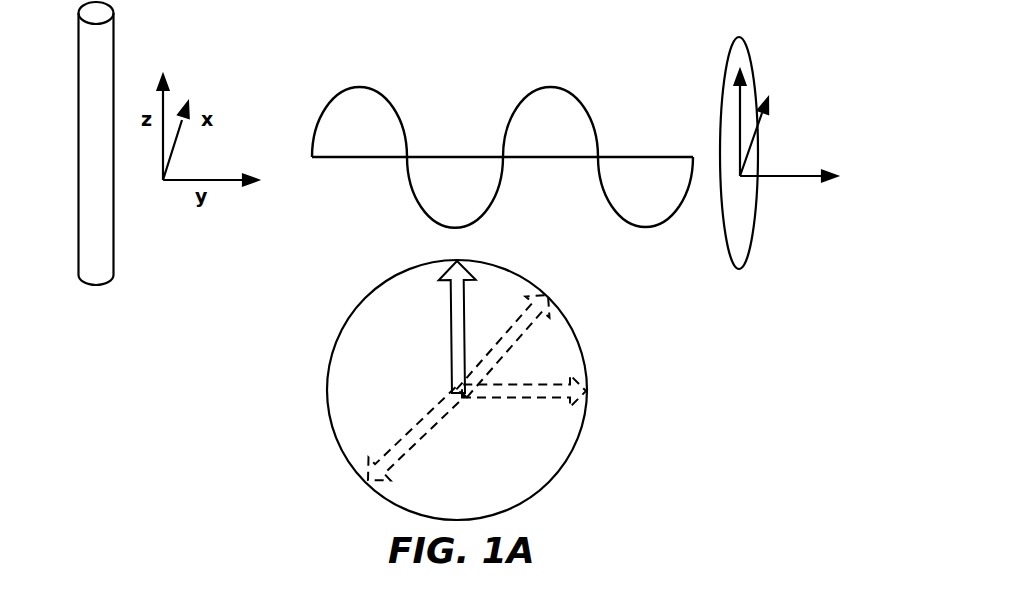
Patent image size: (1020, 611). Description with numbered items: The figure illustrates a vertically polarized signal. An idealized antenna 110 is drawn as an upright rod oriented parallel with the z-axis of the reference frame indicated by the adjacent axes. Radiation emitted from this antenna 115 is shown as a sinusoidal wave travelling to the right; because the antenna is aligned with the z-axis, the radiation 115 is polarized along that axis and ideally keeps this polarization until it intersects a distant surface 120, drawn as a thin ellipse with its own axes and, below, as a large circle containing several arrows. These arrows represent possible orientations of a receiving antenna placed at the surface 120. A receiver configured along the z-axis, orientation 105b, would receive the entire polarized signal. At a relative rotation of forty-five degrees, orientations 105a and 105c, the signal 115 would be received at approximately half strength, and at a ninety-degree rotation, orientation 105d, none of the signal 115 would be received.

The idealized antenna 110 is at (96, 284).
The radiation emitted from the antenna 115 is at (560, 84).
The distant surface 120 is at (752, 237).
The orientation 105a is at (370, 470).
The orientation 105b is at (455, 262).
The orientation 105c is at (533, 297).
The orientation 105d is at (583, 393).